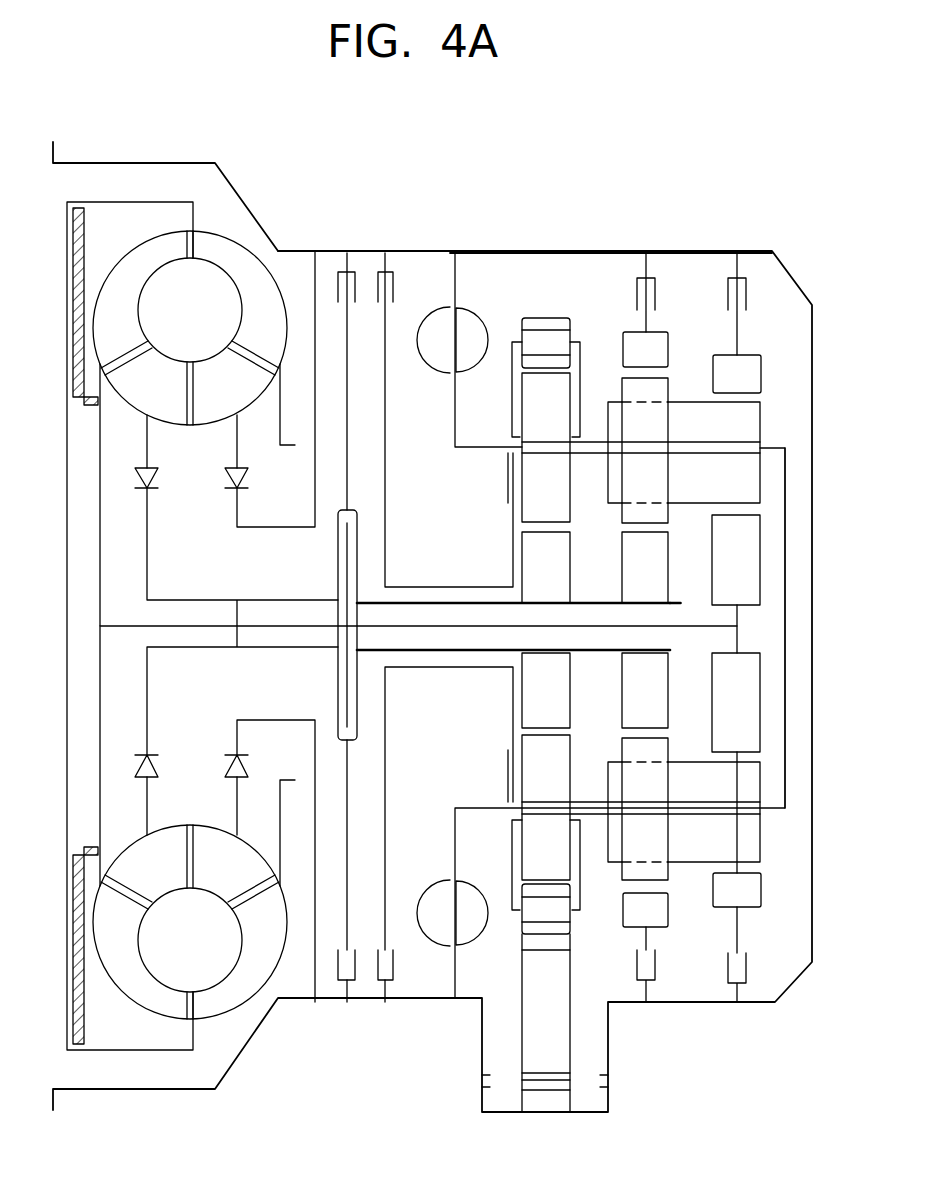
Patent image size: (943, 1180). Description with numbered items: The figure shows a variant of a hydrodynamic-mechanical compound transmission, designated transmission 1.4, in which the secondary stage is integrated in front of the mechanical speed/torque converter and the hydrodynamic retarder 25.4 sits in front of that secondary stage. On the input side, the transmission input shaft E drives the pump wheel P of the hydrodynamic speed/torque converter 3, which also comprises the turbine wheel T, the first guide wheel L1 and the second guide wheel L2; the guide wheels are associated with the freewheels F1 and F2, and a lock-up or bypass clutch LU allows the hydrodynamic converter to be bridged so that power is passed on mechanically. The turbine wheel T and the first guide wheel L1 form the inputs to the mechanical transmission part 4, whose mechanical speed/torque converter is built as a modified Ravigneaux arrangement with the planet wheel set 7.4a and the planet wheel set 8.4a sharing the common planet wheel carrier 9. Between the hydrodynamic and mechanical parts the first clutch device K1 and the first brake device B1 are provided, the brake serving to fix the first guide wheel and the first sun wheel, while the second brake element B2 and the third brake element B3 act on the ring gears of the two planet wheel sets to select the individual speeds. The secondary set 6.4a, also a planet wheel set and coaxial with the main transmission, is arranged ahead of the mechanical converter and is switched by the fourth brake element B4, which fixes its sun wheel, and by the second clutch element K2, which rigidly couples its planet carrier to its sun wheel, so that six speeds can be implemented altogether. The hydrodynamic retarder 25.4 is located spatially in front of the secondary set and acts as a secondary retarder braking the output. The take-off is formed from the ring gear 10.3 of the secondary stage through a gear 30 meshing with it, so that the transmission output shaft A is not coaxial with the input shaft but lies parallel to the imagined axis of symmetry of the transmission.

The bypass clutch LU is at (80, 210).
The hydrodynamic speed/torque converter 3 is at (210, 223).
The transmission 1.4 is at (355, 200).
The mechanical transmission part 4 is at (530, 245).
The first brake device B1 is at (348, 252).
The fourth brake element B4 is at (386, 252).
The second brake element B2 is at (646, 252).
The third brake element B3 is at (740, 252).
The secondary set 6.4a is at (532, 318).
The hydrodynamic retarder 25.4 is at (449, 366).
The planet wheel set 8.4a is at (752, 427).
The planet wheel carrier 9 is at (786, 488).
The second clutch device K2 is at (508, 472).
The first clutch device K1 is at (338, 563).
The planet wheel set 7.4a is at (672, 603).
The transmission input shaft E is at (67, 630).
The freewheel F1 is at (236, 621).
The freewheel F2 is at (270, 626).
The turbine wheel T is at (112, 595).
The pump wheel P is at (274, 595).
The first guide wheel L1 is at (147, 604).
The second guide wheel L2 is at (221, 604).
The ring gear 10.3 is at (528, 1036).
The transmission output shaft A is at (570, 1053).
The gear 30 is at (533, 1100).